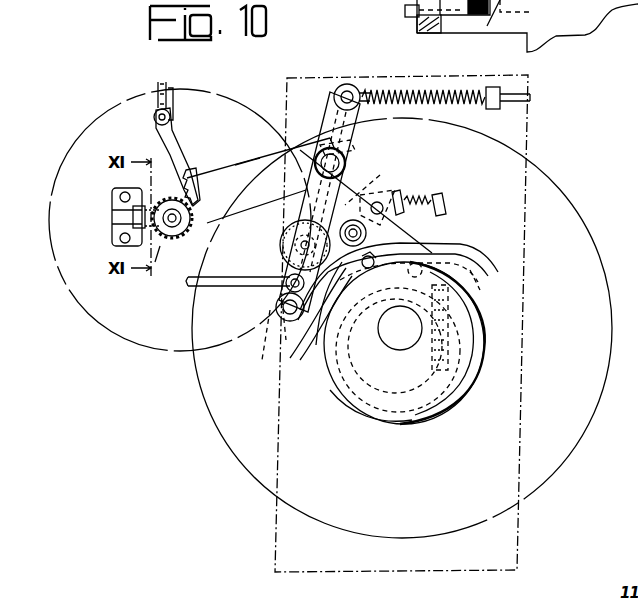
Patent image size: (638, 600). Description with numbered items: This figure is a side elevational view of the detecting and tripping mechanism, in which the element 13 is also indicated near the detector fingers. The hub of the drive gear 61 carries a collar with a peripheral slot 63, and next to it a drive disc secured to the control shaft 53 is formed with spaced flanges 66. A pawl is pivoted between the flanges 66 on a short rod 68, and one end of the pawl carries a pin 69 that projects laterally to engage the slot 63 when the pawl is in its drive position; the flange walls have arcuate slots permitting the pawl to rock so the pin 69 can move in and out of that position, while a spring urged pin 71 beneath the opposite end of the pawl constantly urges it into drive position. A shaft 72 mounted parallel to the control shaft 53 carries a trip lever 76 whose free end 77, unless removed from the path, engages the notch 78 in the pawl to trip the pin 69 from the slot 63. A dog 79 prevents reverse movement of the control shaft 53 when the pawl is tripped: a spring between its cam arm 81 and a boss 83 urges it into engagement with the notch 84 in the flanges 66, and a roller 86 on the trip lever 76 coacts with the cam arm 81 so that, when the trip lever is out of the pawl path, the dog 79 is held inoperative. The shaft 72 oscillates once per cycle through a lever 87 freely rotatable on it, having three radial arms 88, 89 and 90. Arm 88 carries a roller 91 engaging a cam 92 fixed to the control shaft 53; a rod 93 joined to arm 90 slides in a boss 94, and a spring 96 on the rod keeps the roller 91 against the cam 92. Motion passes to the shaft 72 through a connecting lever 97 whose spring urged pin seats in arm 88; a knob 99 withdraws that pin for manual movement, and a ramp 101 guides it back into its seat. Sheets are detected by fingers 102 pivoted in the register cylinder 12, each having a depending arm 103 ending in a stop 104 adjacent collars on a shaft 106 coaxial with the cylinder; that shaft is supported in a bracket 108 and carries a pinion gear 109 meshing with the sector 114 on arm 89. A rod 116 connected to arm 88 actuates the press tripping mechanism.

The register cylinder 12 is at (71, 147).
The pin 13 is at (165, 88).
The control shaft 53 is at (400, 328).
The drive gear 61 is at (207, 404).
The slot 63 is at (393, 346).
The flanges 66 is at (476, 354).
The short rod 68 is at (422, 268).
The pin 69 is at (377, 260).
The spring urged pin 71 is at (476, 292).
The shaft 72 is at (342, 162).
The trip lever 76 is at (360, 190).
The free end 77 is at (455, 240).
The notch 78 is at (464, 242).
The dog 79 is at (320, 332).
The cam arm 81 is at (402, 196).
The boss 83 is at (442, 205).
The notch 84 is at (288, 348).
The roller 86 is at (366, 201).
The lever 87 is at (322, 150).
The arm 88 is at (306, 207).
The arm 89 is at (242, 176).
The arm 90 is at (338, 118).
The roller 91 is at (283, 316).
The cam 92 is at (390, 424).
The rod 93 is at (528, 93).
The boss 94 is at (494, 110).
The spring 96 is at (429, 93).
The connecting lever 97 is at (300, 228).
The knob 99 is at (286, 248).
The ramp 101 is at (283, 342).
The fingers 102 is at (173, 90).
The depending arm 103 is at (161, 151).
The stop 104 is at (190, 230).
The shaft 106 is at (154, 264).
The bracket 108 is at (118, 232).
The pinion gear 109 is at (162, 228).
The sector 114 is at (195, 178).
The rod 116 is at (224, 285).